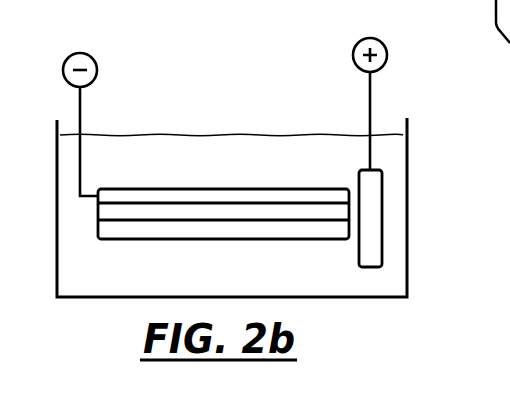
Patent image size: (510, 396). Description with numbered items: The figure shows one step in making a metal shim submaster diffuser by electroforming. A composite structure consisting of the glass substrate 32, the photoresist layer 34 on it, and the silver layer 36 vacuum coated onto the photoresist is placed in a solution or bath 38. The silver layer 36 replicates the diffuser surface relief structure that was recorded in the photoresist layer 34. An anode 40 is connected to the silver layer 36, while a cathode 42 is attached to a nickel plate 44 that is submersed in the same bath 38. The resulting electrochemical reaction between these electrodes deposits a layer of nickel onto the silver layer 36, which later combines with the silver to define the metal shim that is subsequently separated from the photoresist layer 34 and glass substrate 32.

The glass substrate 32 is at (256, 230).
The photoresist layer 34 is at (270, 208).
The silver layer 36 is at (224, 160).
The bath 38 is at (162, 135).
The anode 40 is at (97, 57).
The cathode 42 is at (353, 49).
The nickel plate 44 is at (372, 256).